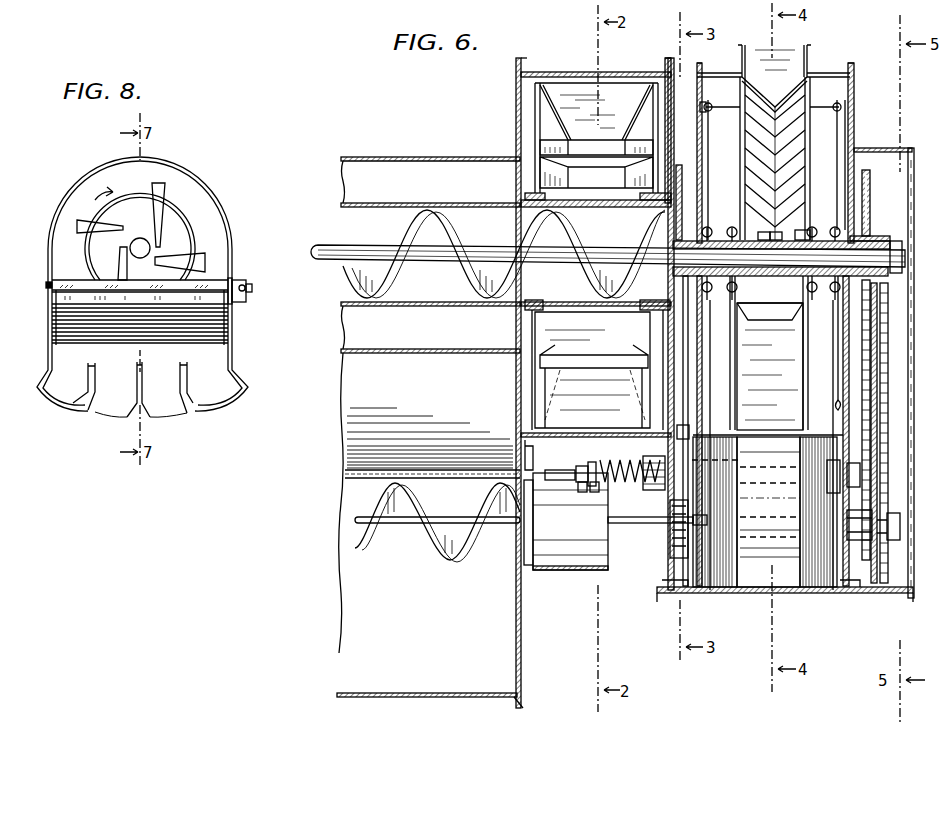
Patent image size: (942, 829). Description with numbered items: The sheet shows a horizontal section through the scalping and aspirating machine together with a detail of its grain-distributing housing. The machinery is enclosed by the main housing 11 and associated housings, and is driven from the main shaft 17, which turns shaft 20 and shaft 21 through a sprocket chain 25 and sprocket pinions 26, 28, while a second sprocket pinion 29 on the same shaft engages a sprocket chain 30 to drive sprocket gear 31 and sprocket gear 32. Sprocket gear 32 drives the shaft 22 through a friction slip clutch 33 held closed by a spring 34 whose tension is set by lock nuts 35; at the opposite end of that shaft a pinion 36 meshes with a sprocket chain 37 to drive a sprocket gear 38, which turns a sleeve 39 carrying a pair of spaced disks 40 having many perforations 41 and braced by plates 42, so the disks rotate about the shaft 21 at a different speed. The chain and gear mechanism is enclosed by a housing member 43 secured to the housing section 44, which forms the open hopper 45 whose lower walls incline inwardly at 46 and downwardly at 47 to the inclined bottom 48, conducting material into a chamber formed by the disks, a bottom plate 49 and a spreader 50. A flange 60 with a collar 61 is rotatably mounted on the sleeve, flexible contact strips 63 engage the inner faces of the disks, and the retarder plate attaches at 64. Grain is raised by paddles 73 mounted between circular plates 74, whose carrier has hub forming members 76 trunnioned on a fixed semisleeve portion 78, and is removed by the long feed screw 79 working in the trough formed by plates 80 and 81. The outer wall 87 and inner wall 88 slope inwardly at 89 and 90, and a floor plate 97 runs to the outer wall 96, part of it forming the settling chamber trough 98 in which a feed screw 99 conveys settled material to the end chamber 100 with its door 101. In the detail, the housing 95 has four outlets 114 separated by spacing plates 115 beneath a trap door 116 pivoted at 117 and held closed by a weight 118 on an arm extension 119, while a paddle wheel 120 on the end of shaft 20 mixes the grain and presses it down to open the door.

In FIG. 6, the main housing 11 is at (521, 668).
In FIG. 6, the main shaft 17 is at (622, 527).
In FIG. 6, the shaft 21 is at (372, 246).
In FIG. 6, the shaft 22 is at (582, 467).
In FIG. 6, the sprocket chain 25 is at (890, 414).
In FIG. 6, the sprocket pinion 26 is at (880, 572).
In FIG. 6, the sprocket pinion 28 is at (902, 246).
In FIG. 6, the second sprocket pinion 29 is at (677, 548).
In FIG. 6, the sprocket chain 30 is at (689, 433).
In FIG. 6, the sprocket gear 31 is at (682, 178).
In FIG. 6, the sprocket gear 32 is at (655, 491).
In FIG. 6, the friction slip clutch 33 is at (738, 459).
In FIG. 6, the spring 34 is at (618, 462).
In FIG. 6, the lock nuts 35 is at (593, 493).
In FIG. 6, the pinion 36 is at (922, 373).
In FIG. 6, the sprocket chain 37 is at (870, 386).
In FIG. 6, the sprocket gear 38 is at (871, 192).
In FIG. 6, the sleeve 39 is at (860, 238).
In FIG. 6, the disks 40 is at (740, 70).
In FIG. 6, the perforations 41 is at (778, 186).
In FIG. 6, the plates 42 is at (710, 140).
In FIG. 6, the housing member 43 is at (895, 597).
In FIG. 6, the housing section 44 is at (836, 590).
In FIG. 6, the open hopper 45 is at (783, 573).
In FIG. 6, the inwardly inclined lower hopper wall 46 is at (725, 570).
In FIG. 6, the downwardly inclined lower hopper wall 47 is at (768, 570).
In FIG. 6, the inclined bottom 48 is at (767, 540).
In FIG. 6, the bottom plate 49 is at (770, 366).
In FIG. 6, the spreader 50 is at (775, 158).
In FIG. 6, the flange 60 is at (778, 233).
In FIG. 6, the collar 61 is at (762, 233).
In FIG. 6, the flexible contact strips 63 is at (735, 313).
In FIG. 6, the attachment of retarder plate 64 is at (803, 232).
In FIG. 6, the paddles 73 is at (605, 147).
In FIG. 6, the circular plates 74 is at (538, 70).
In FIG. 6, the hub forming members 76 is at (518, 330).
In FIG. 6, the fixed semisleeve portion 78 is at (577, 300).
In FIG. 6, the feed screw 79 is at (478, 268).
In FIG. 6, the trough side plate 80 is at (432, 203).
In FIG. 6, the trough side plate 81 is at (405, 306).
In FIG. 6, the outer wall 87 is at (415, 157).
In FIG. 6, the inner wall 88 is at (386, 353).
In FIG. 6, the inwardly sloping lower end of outer wall 89 is at (362, 182).
In FIG. 6, the inwardly sloping lower end of inner wall 90 is at (356, 328).
In FIG. 6, the outer wall 96 is at (405, 698).
In FIG. 6, the floor or bottom plate 97 is at (360, 612).
In FIG. 6, the settling chamber trough 98 is at (356, 490).
In FIG. 6, the feed screw 99 is at (450, 560).
In FIG. 6, the end chamber 100 is at (578, 572).
In FIG. 6, the door 101 is at (556, 472).
In FIG. 8, the shaft 20 is at (148, 243).
In FIG. 8, the chamber or housing 95 is at (213, 181).
In FIG. 8, the outlets 114 is at (108, 403).
In FIG. 8, the spacing plates 115 is at (95, 373).
In FIG. 8, the trap door 116 is at (205, 323).
In FIG. 8, the pivot 117 is at (45, 287).
In FIG. 8, the weight 118 is at (248, 298).
In FIG. 8, the arm extension 119 is at (251, 277).
In FIG. 8, the paddle wheel 120 is at (163, 187).